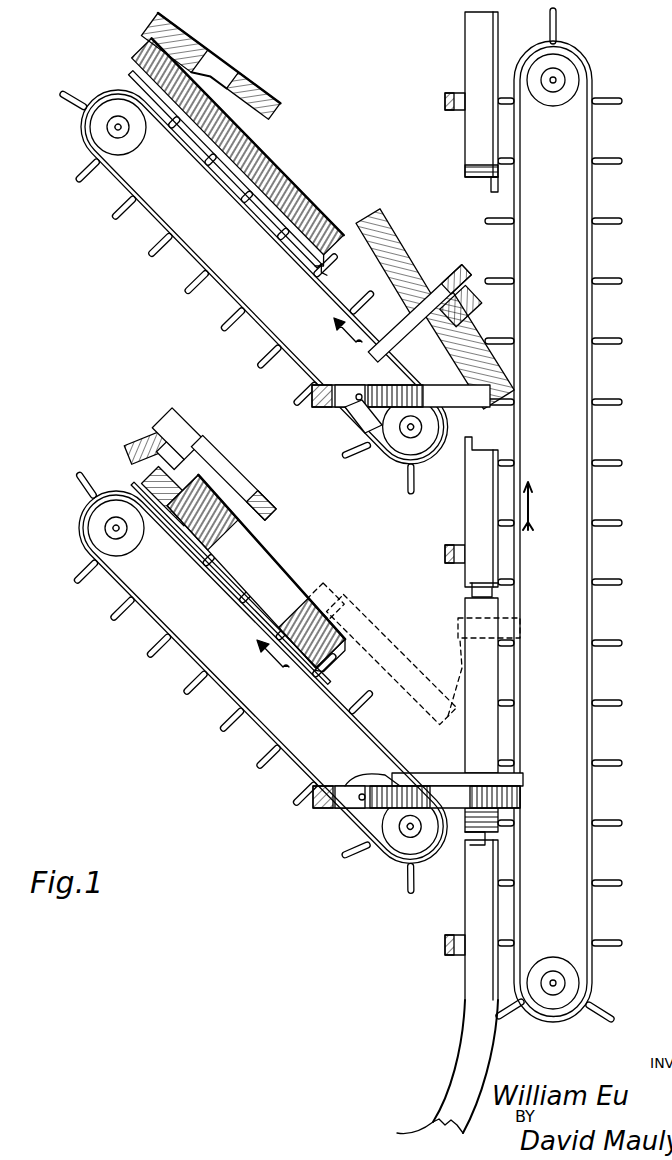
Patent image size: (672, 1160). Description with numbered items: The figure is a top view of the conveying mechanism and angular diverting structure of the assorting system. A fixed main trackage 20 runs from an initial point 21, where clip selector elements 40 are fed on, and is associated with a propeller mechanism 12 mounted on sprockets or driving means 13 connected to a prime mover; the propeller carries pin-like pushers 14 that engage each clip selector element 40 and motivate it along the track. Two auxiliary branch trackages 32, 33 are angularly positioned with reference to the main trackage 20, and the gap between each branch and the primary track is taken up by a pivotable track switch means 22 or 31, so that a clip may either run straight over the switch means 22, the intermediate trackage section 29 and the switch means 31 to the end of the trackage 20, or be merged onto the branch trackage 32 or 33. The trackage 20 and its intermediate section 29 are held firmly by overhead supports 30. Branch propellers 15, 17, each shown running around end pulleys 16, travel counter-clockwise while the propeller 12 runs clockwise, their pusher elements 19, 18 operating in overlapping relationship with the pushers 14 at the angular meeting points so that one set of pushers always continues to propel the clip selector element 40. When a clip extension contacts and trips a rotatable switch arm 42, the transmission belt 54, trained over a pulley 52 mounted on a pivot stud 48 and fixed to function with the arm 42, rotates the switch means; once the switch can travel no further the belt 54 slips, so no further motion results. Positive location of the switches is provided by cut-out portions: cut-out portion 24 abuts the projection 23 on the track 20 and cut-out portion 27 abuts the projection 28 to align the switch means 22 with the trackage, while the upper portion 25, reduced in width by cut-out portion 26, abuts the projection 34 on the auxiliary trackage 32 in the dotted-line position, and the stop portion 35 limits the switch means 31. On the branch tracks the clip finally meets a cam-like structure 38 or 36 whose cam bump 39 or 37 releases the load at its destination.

The propeller mechanism 12 is at (604, 261).
The sprockets or driving means 13 is at (568, 68).
The pushers 14 is at (499, 280).
The propeller 15 is at (182, 667).
The inclined conveyor pulleys 16 is at (98, 127).
The propeller 17 is at (150, 230).
The pusher elements 18 is at (184, 296).
The pusher elements 19 is at (224, 729).
The main trackage 20 is at (465, 47).
The initial point 21 is at (432, 1129).
The track switch means 22 is at (388, 678).
The projection 23 is at (467, 843).
The cut-out portion 24 is at (483, 850).
The upper portion 25 is at (468, 585).
The cut-out portion 26 is at (470, 594).
The cut-out portion 27 is at (460, 601).
The projection 28 is at (500, 576).
The intermediate trackage section 29 is at (469, 488).
The overhead supports 30 is at (447, 94).
The track switch means 31 is at (458, 348).
The auxiliary branch trackage 32 is at (281, 575).
The auxiliary branch trackage 33 is at (292, 178).
The projection 34 is at (340, 643).
The stop portion 35 is at (333, 250).
The cam-like structure 36 is at (274, 490).
The cam bump 37 is at (201, 447).
The cam-like structure 38 is at (262, 81).
The cam bump 39 is at (217, 46).
The clip selector element 40 is at (470, 306).
The rotatable switch arm 42 is at (453, 278).
The pivot stud 48 is at (355, 400).
The pulley 52 is at (356, 383).
The transmission belt 54 is at (386, 433).